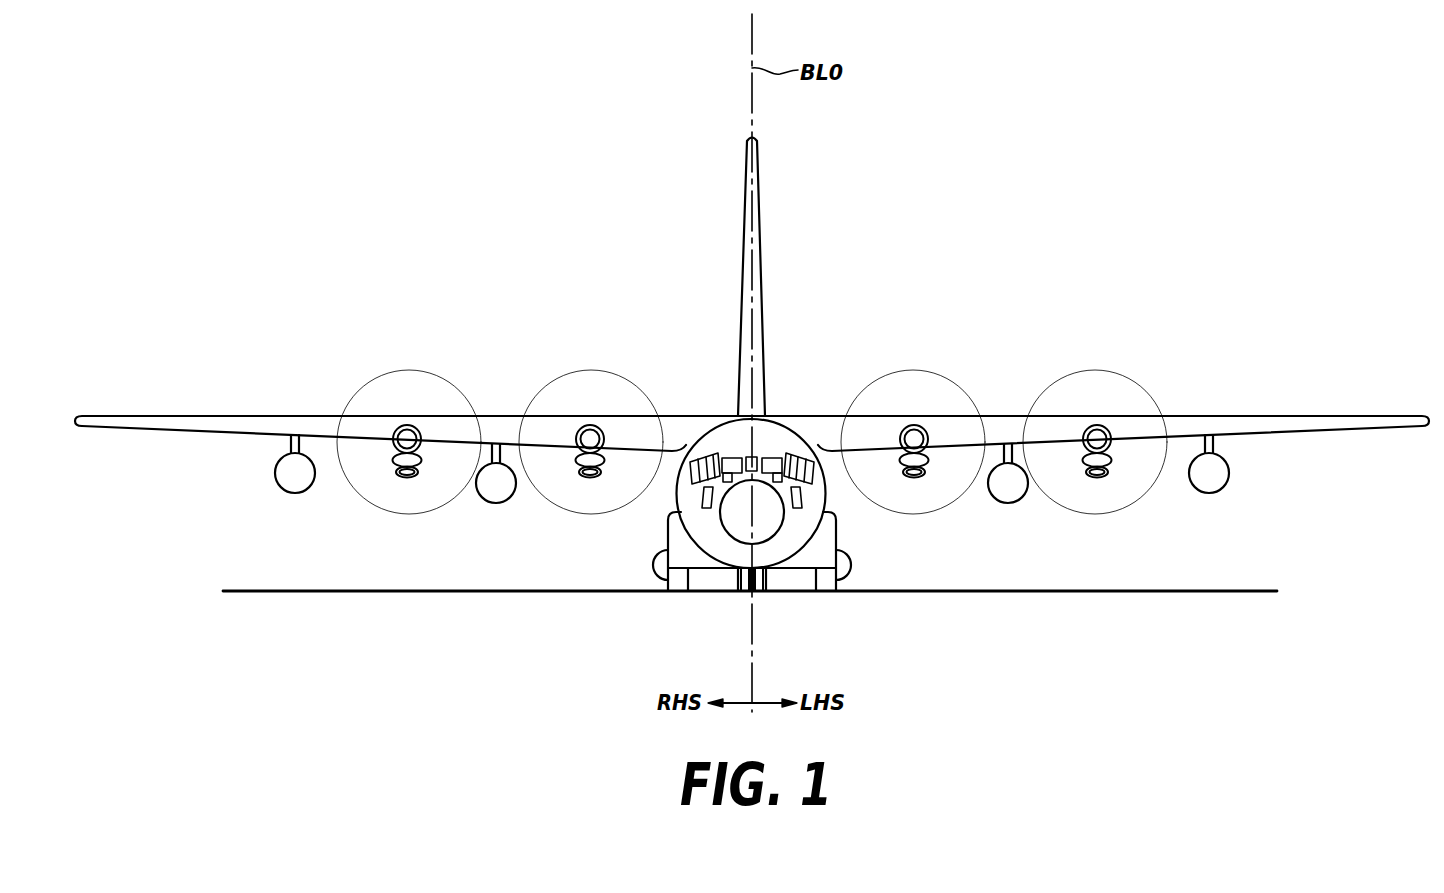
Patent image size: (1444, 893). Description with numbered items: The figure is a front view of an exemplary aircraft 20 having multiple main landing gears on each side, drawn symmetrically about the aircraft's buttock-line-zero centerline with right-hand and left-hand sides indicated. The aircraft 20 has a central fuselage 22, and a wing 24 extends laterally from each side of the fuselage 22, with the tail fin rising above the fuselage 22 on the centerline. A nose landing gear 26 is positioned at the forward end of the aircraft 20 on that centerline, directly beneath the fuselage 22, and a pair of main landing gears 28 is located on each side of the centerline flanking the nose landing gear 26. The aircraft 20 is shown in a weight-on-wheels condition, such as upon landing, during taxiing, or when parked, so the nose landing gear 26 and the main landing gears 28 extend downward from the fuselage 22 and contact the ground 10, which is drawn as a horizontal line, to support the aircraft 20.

The ground 10 is at (1222, 591).
The aircraft 20 is at (840, 320).
The fuselage 22 is at (722, 440).
The wing 24 is at (1193, 416).
The nose landing gear 26 is at (760, 592).
The main landing gears 28 is at (680, 592).